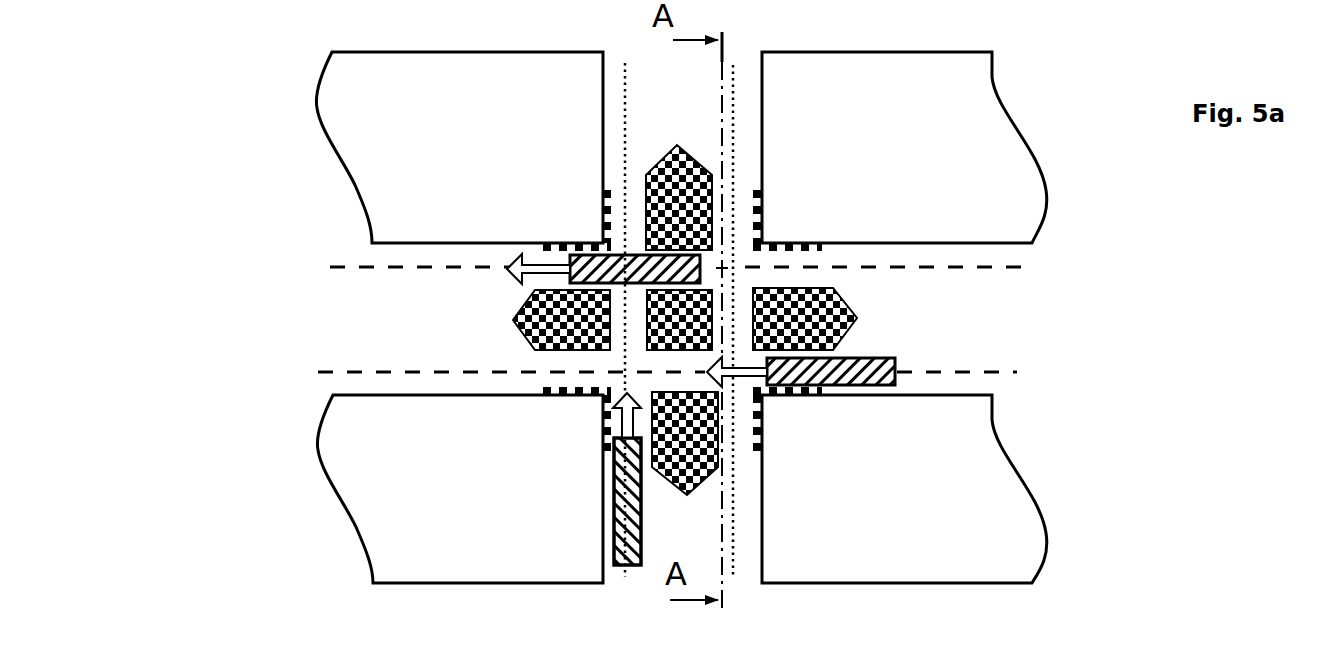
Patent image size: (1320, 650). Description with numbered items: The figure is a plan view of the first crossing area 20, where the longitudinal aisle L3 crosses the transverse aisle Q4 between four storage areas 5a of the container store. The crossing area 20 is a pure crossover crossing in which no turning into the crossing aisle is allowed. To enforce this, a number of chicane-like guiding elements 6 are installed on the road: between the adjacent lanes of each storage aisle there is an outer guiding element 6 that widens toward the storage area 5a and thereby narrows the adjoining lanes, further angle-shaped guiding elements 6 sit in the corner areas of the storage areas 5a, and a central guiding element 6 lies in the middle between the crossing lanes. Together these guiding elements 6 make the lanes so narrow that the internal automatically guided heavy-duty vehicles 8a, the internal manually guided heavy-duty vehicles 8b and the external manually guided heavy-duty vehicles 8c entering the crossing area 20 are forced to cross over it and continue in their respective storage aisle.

The storage area 5a is at (393, 178).
The guiding element 6 is at (643, 320).
The first crossing area 20 is at (637, 151).
The internal automatically guided heavy-duty vehicle 8a is at (612, 503).
The internal manually guided heavy-duty vehicle 8b is at (627, 501).
The external manually guided heavy-duty vehicle 8c is at (516, 270).
The transverse aisle Q4 is at (700, 118).
The longitudinal aisle L3 is at (963, 300).